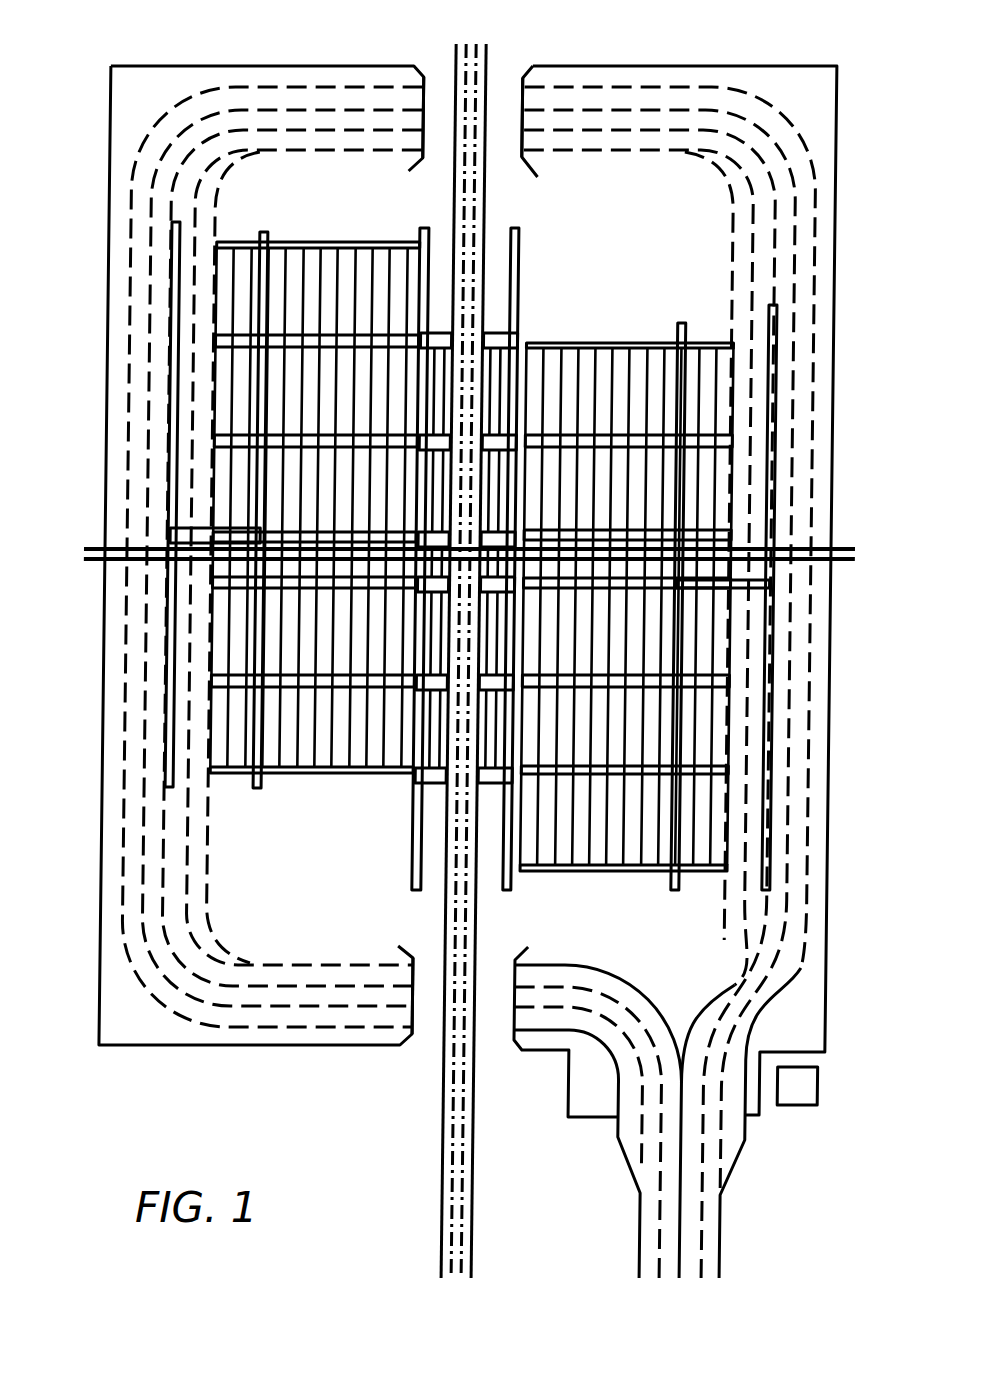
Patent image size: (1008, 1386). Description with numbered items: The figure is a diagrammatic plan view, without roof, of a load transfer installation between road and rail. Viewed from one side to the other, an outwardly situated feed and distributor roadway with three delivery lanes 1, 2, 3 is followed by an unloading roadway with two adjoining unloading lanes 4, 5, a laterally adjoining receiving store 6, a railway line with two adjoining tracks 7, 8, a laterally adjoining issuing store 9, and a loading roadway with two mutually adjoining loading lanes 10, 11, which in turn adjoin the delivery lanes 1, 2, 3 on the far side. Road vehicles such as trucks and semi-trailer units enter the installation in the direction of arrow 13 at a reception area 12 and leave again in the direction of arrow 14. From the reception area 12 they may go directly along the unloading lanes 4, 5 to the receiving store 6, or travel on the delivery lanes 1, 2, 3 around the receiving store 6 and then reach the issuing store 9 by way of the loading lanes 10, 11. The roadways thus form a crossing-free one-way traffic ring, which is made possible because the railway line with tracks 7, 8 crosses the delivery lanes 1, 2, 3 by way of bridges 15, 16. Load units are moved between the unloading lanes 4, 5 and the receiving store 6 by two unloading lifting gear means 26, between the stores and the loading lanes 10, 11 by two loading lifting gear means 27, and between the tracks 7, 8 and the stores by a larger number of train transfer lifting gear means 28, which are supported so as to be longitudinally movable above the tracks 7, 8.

The delivery lane 1 is at (825, 483).
The delivery lane 2 is at (799, 435).
The delivery lane 3 is at (778, 368).
The unloading lane 4 is at (751, 918).
The unloading lane 5 is at (737, 888).
The receiving store 6 is at (608, 328).
The track 7 is at (479, 201).
The track 8 is at (448, 203).
The issuing store 9 is at (324, 804).
The loading lane 10 is at (200, 817).
The loading lane 11 is at (179, 865).
The reception area 12 is at (813, 1082).
The arrow 13 is at (709, 1342).
The arrow 14 is at (669, 1277).
The bridge 15 is at (438, 1015).
The bridge 16 is at (494, 90).
The unloading lifting gear means 26 is at (750, 583).
The loading lifting gear means 27 is at (175, 540).
The train transfer lifting gear means 28 is at (428, 773).